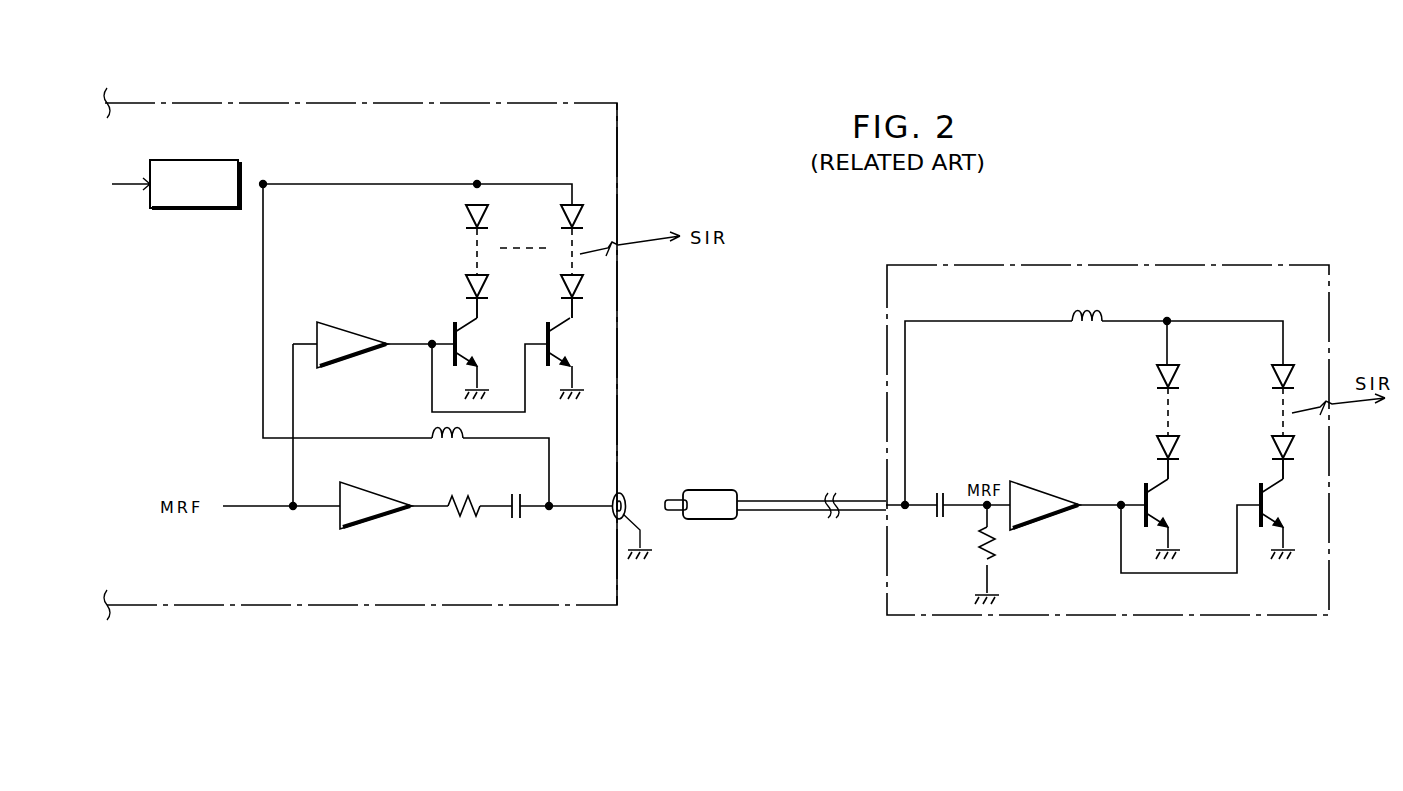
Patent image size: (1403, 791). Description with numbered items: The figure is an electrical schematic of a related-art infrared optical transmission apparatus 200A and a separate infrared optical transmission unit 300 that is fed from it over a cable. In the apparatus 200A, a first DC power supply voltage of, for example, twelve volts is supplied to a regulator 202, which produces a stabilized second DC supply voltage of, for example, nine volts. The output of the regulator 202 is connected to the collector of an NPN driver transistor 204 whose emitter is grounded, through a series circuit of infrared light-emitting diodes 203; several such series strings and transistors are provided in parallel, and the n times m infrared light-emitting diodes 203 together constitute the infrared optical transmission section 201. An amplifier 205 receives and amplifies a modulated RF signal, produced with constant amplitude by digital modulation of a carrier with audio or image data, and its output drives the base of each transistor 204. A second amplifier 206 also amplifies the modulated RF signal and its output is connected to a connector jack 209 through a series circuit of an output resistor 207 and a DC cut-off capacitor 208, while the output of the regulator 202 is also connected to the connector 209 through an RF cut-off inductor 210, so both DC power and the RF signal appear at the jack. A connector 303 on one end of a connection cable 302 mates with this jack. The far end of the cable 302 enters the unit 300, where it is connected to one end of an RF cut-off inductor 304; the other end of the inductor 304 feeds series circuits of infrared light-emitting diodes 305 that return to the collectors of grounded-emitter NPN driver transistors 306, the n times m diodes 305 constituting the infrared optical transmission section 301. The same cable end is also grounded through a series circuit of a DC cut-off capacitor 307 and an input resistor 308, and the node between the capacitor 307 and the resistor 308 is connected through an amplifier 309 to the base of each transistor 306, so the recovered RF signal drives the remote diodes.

The infrared optical transmission apparatus 200A is at (357, 605).
The infrared optical transmission section 201 is at (590, 174).
The regulator 202 is at (210, 160).
The infrared light-emitting diodes 203 is at (628, 273).
The NPN driver transistors 204 is at (630, 334).
The amplifier 205 is at (339, 322).
The amplifier 206 is at (368, 530).
The output resistor 207 is at (462, 514).
The DC cut-off capacitor 208 is at (516, 520).
The connector (jack) 209 is at (626, 498).
The RF cut-off inductor 210 is at (456, 441).
The infrared optical transmission unit 300 is at (1125, 615).
The infrared optical transmission section 301 is at (1308, 304).
The connection cable 302 is at (775, 512).
The connector 303 is at (707, 520).
The RF cut-off inductor 304 is at (1075, 317).
The infrared light-emitting diodes 305 is at (1273, 444).
The NPN driver transistors 306 is at (1258, 491).
The DC cut-off capacitor 307 is at (936, 519).
The input resistor 308 is at (978, 550).
The amplifier 309 is at (1050, 522).